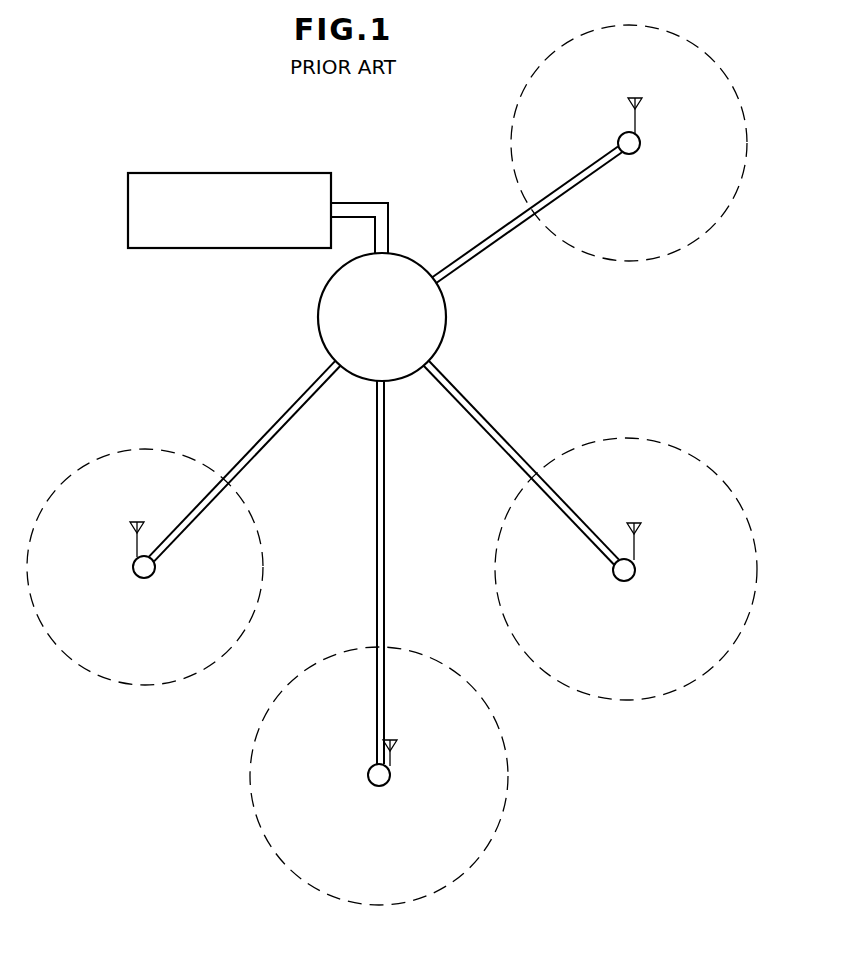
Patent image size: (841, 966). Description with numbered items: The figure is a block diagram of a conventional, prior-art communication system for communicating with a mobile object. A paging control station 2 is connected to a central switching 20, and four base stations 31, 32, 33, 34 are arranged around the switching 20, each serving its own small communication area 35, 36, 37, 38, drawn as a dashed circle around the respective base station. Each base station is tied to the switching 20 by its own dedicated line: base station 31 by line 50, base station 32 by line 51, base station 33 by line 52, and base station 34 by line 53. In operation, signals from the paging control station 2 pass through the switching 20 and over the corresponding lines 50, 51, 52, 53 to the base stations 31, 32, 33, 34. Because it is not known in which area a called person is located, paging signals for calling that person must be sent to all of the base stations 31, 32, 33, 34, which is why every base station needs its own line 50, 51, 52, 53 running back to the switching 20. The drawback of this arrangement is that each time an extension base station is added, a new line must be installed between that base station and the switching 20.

The paging control station 2 is at (283, 173).
The switching 20 is at (318, 299).
The base station 31 is at (151, 575).
The base station 32 is at (385, 783).
The base station 33 is at (630, 577).
The base station 34 is at (633, 154).
The small communication area 35 is at (140, 672).
The small communication area 36 is at (485, 843).
The small communication area 37 is at (593, 683).
The small communication area 38 is at (648, 245).
The line 50 is at (299, 413).
The line 51 is at (385, 499).
The line 52 is at (494, 428).
The line 53 is at (499, 245).